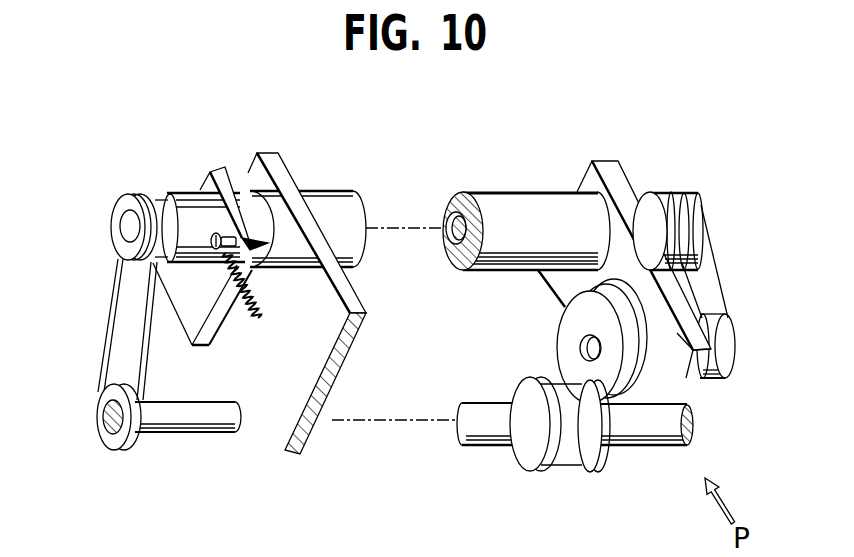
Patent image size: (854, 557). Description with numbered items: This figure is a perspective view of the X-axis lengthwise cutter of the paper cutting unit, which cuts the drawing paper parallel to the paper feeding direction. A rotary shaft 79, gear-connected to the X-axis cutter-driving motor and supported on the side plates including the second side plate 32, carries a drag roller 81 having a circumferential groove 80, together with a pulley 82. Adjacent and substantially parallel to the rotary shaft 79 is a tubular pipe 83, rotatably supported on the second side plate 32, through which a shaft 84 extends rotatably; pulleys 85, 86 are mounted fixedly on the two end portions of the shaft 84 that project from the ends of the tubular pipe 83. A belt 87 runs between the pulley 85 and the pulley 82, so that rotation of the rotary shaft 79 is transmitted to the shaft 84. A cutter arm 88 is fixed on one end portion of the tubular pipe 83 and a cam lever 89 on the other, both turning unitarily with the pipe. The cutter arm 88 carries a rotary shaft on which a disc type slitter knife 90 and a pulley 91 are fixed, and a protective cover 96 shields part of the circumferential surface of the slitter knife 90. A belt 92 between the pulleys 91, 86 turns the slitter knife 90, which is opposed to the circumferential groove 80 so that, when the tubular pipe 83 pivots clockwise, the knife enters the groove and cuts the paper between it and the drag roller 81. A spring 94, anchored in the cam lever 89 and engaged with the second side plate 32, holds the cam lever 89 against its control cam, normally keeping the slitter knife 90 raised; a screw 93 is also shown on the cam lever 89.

The second side plate 32 is at (290, 398).
The rotary shaft 79 is at (505, 423).
The circumferential groove 80 is at (572, 450).
The drag roller 81 is at (593, 442).
The pulley 82 is at (118, 438).
The tubular pipe 83 is at (527, 213).
The shaft 84 is at (447, 222).
The pulley 85 is at (124, 194).
The pulley 86 is at (698, 193).
The belt 87 is at (113, 330).
The cutter arm 88 is at (619, 193).
The cam lever 89 is at (213, 330).
The disc type slitter knife 90 is at (563, 340).
The pulley 91 is at (730, 378).
The belt 92 is at (713, 291).
The screw 93 is at (214, 234).
The spring 94 is at (255, 283).
The protective cover 96 is at (632, 407).